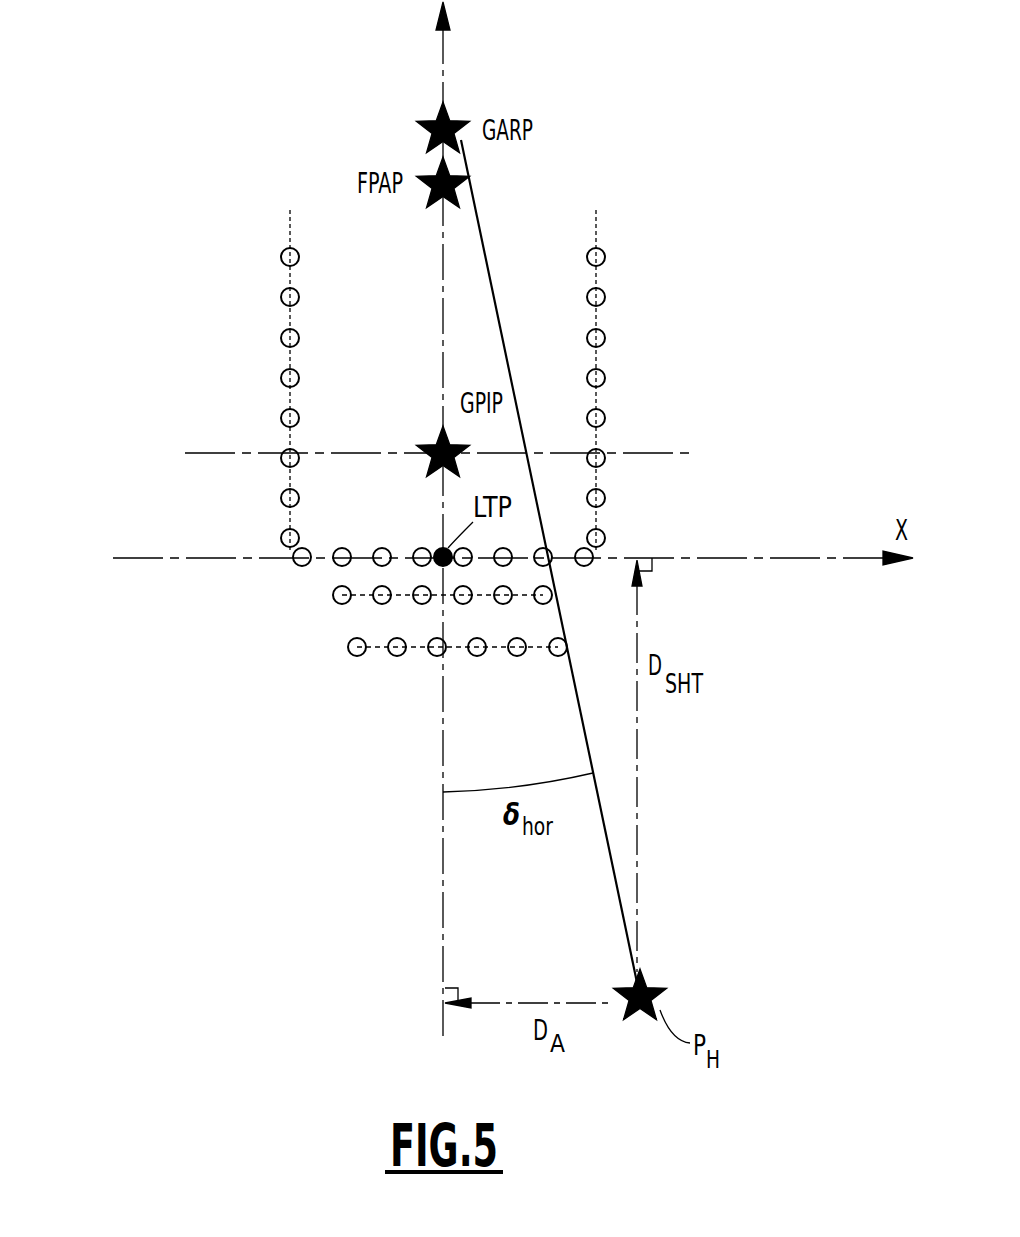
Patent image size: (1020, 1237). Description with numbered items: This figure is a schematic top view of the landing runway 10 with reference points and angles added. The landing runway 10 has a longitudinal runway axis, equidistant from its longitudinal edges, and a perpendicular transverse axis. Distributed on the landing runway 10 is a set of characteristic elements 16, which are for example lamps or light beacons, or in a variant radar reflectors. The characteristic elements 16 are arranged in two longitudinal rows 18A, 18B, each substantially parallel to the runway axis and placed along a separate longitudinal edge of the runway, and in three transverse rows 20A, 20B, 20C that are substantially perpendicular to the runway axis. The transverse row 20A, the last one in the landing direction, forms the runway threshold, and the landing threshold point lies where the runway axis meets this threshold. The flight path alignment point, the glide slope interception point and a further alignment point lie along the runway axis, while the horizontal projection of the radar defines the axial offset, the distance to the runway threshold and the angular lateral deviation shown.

The landing runway 10 is at (125, 383).
The characteristic elements 16 is at (281, 338).
The longitudinal row 18A is at (238, 377).
The longitudinal row 18B is at (645, 368).
The transverse row 20A is at (286, 568).
The transverse row 20B is at (326, 602).
The transverse row 20C is at (344, 654).